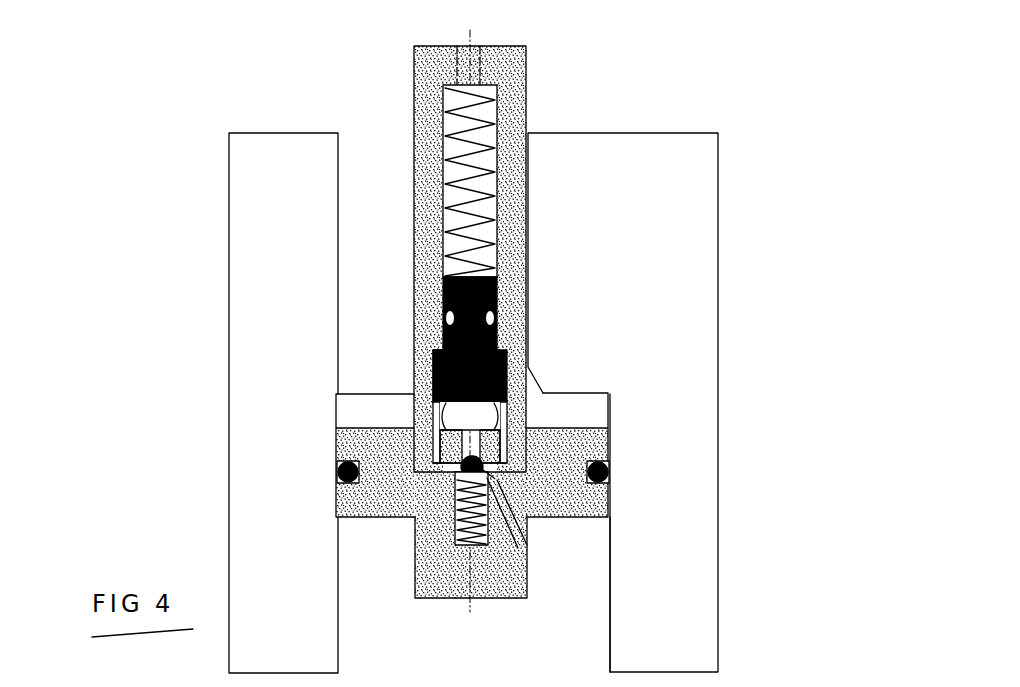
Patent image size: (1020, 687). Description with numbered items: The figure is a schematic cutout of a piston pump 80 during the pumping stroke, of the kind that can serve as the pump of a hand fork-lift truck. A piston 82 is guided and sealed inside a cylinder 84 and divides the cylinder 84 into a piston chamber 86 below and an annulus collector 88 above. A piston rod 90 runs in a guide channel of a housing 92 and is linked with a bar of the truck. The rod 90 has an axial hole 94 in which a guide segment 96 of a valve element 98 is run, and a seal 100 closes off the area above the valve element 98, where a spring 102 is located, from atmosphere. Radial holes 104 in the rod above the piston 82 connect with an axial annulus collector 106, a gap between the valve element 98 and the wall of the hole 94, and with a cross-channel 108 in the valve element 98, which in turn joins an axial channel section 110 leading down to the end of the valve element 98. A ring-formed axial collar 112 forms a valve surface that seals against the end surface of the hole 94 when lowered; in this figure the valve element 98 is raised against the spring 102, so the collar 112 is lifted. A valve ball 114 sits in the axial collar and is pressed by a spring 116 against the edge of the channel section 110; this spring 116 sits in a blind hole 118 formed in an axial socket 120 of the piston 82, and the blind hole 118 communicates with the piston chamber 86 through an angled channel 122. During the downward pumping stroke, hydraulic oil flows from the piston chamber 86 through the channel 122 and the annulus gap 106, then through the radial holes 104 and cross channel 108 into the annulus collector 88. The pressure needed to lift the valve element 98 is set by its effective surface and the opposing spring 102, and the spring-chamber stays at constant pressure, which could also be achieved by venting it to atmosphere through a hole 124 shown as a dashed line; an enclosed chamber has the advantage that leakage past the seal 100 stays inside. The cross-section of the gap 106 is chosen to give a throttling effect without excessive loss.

The piston pump 80 is at (641, 118).
The piston 82 is at (588, 508).
The cylinder 84 is at (612, 570).
The piston chamber 86 is at (384, 577).
The annulus collector 88 is at (592, 424).
The piston rod 90 is at (508, 108).
The housing 92 is at (680, 228).
The axial hole 94 is at (490, 239).
The guide segment 96 is at (437, 363).
The valve element 98 is at (507, 364).
The seal 100 is at (497, 312).
The spring 102 is at (453, 128).
The radial holes 104 is at (425, 421).
The axial annulus collector 106 is at (440, 437).
The cross-channel 108 is at (437, 407).
The axial channel section 110 is at (493, 476).
The axial collar 112 is at (458, 474).
The valve ball 114 is at (458, 478).
The spring 116 is at (473, 547).
The blind hole 118 is at (453, 528).
The axial socket 120 is at (517, 588).
The angled channel 122 is at (518, 550).
The hole 124 is at (478, 58).